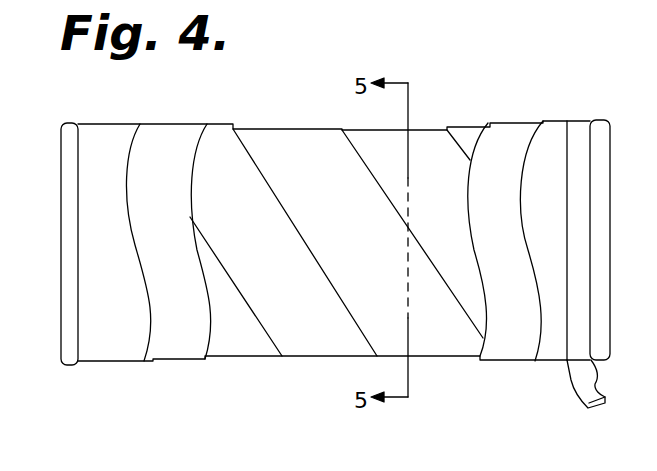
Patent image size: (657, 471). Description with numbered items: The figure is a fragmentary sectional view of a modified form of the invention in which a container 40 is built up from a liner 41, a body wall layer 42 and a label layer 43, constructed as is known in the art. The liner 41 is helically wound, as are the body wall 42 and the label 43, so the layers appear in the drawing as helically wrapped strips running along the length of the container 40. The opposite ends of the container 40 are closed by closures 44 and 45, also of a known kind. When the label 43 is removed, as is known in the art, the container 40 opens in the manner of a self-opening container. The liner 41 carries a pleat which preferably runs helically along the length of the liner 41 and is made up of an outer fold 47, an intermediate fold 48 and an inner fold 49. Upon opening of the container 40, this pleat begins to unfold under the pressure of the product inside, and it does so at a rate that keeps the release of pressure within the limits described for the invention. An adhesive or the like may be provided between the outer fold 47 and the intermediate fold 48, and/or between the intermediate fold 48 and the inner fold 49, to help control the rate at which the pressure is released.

The container 40 is at (273, 89).
The liner 41 is at (288, 129).
The body wall layer 42 is at (177, 123).
The label layer 43 is at (109, 123).
The closure 44 is at (61, 231).
The closure 45 is at (610, 325).
The outer fold 47 is at (588, 241).
The intermediate fold 48 is at (612, 240).
The inner fold 49 is at (656, 207).